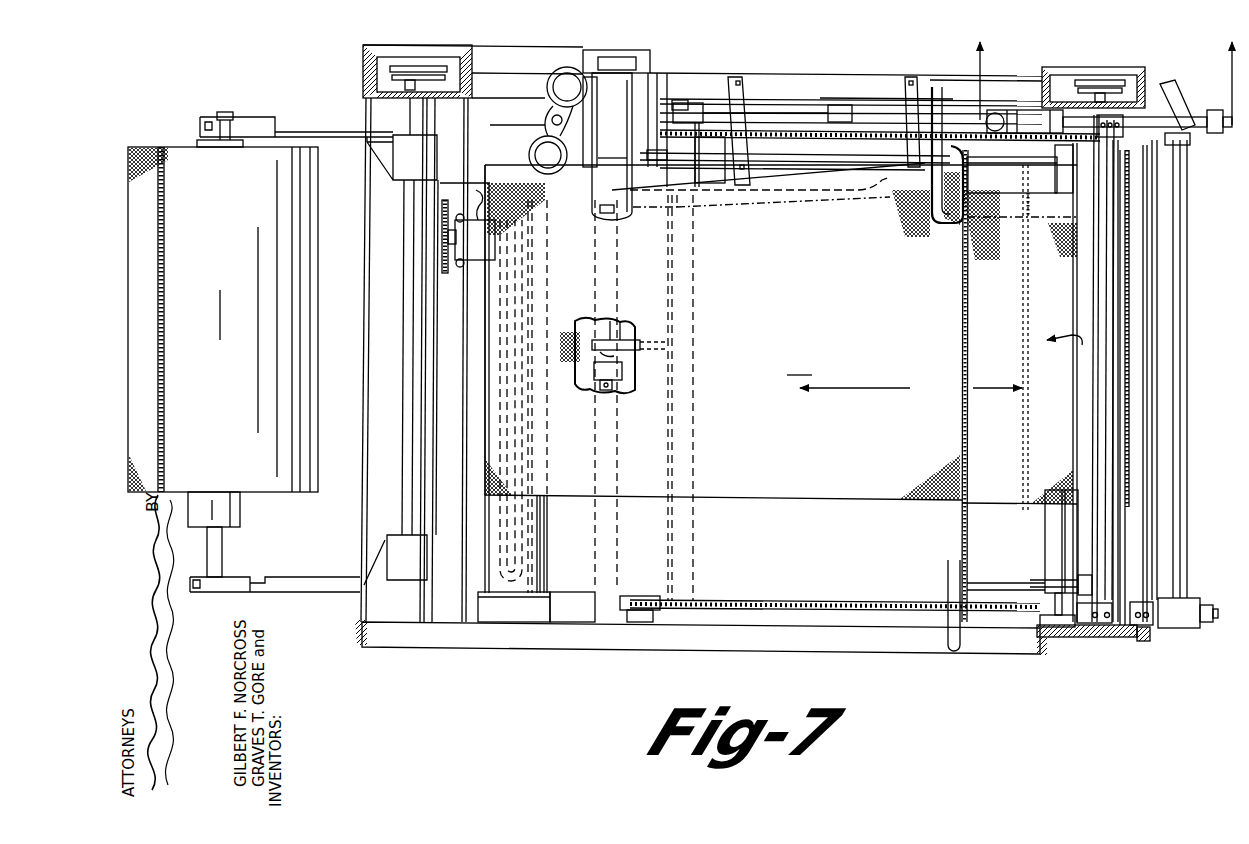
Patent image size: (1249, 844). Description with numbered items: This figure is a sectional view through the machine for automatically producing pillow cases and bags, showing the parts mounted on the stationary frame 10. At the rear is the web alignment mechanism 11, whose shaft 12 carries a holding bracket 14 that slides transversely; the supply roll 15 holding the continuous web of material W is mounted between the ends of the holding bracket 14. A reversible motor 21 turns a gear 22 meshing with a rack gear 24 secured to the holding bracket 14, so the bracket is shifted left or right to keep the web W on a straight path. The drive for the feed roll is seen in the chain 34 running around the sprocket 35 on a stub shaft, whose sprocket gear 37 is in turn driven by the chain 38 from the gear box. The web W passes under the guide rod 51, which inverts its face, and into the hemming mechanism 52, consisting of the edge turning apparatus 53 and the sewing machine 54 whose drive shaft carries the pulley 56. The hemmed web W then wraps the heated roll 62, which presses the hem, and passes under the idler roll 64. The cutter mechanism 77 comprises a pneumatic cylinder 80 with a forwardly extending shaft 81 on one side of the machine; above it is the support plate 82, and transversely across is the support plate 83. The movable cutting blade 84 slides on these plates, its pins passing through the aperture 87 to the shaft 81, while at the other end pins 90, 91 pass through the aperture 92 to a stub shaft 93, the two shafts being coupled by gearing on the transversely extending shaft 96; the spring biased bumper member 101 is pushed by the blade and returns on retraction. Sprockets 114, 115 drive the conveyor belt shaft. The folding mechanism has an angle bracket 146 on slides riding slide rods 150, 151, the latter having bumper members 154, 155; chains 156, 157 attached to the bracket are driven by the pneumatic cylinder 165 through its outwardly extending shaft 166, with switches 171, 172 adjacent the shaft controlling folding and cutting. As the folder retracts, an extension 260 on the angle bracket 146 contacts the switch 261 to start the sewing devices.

The stationary frame 10 is at (527, 650).
The web alignment mechanism 11 is at (314, 592).
The shaft 12 is at (408, 425).
The holding bracket 14 is at (358, 130).
The supply roll 15 is at (233, 506).
The reversible motor 21 is at (470, 262).
The gear 22 is at (440, 238).
The rack gear 24 is at (440, 262).
The chain 34 is at (392, 33).
The sprocket 35 is at (428, 70).
The sprocket gear 37 is at (363, 93).
The chain 38 is at (462, 70).
The guide rod 51 is at (960, 342).
The hemming mechanism 52 is at (740, 226).
The edge turning apparatus 53 is at (855, 178).
The sewing machine 54 is at (627, 143).
The pulley 56 is at (614, 52).
The heated roll 62 is at (492, 528).
The idler roll 64 is at (1050, 533).
The cutter mechanism 77 is at (1083, 382).
The pneumatic cylinder 80 is at (1022, 110).
The forwardly extending shaft 81 is at (1175, 140).
The support plate 82 is at (1172, 112).
The support plate 83 is at (1152, 625).
The movable cutting blade 84 is at (1095, 420).
The aperture 87 is at (1180, 120).
The pin 90 is at (1092, 625).
The pin 91 is at (1101, 625).
The aperture 92 is at (1124, 627).
The stub shaft 93 is at (1168, 622).
The transversely extending shaft 96 is at (1185, 452).
The bumper member 101 is at (1150, 378).
The sprocket 114 is at (1105, 80).
The sprocket 115 is at (1108, 85).
The angle bracket 146 is at (679, 447).
The slide rod 150 is at (1020, 167).
The slide rod 151 is at (1018, 583).
The bumper member 154 is at (1080, 166).
The bumper member 155 is at (1078, 575).
The chain 156 is at (822, 135).
The chain 157 is at (846, 600).
The pneumatic cylinder 165 is at (898, 110).
The outwardly extending shaft 166 is at (805, 110).
The switch 171 is at (690, 105).
The switch 172 is at (842, 105).
The extension 260 is at (628, 330).
The switch 261 is at (612, 372).
The web of textile material W is at (155, 360).